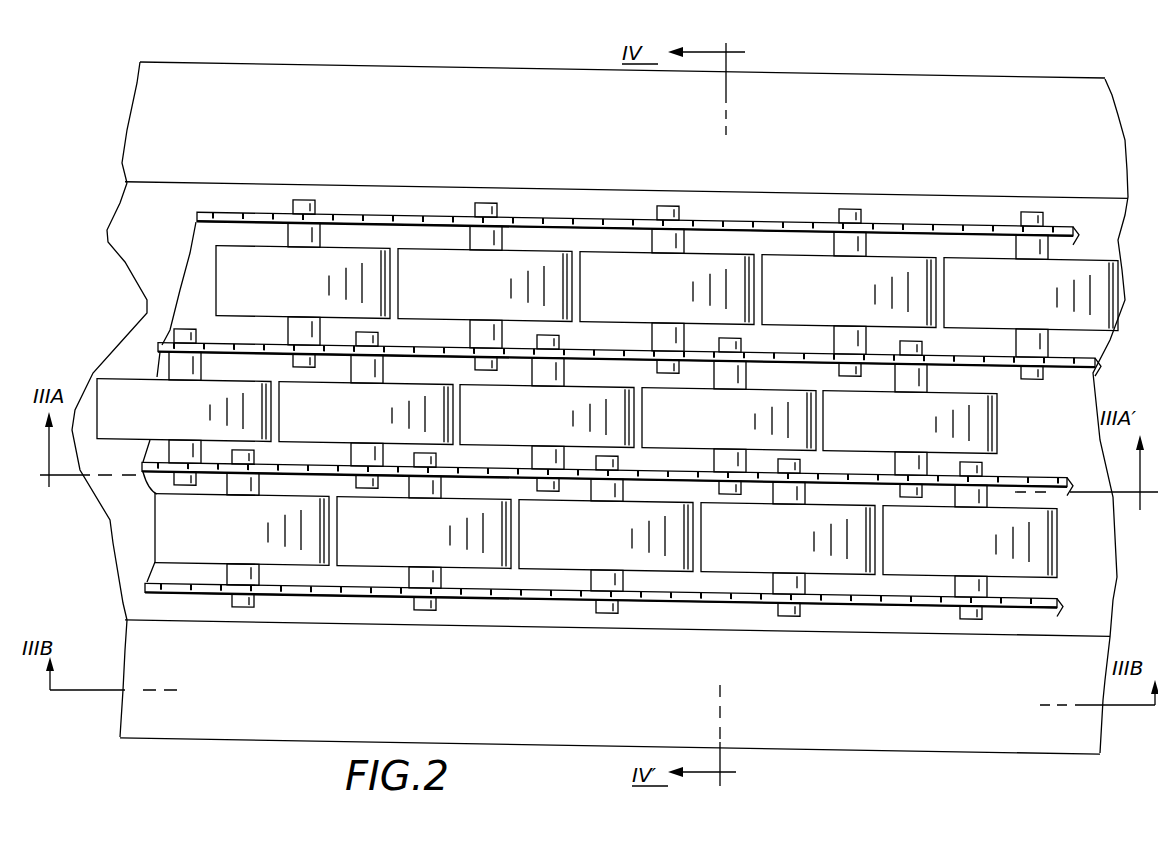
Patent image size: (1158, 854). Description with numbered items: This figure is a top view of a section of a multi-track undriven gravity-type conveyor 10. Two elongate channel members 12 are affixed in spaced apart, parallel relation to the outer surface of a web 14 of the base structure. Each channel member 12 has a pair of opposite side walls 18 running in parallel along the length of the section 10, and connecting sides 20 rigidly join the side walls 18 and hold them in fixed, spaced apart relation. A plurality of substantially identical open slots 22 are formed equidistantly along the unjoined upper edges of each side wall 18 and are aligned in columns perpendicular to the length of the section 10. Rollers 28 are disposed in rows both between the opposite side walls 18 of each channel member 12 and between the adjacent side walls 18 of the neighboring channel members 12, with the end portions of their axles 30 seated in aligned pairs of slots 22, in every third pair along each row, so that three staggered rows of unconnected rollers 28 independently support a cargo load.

The multi-track conveyor section 10 is at (386, 60).
The channel member 12 is at (217, 212).
The web 14 is at (1108, 614).
The side wall 18 is at (192, 231).
The connecting side 20 is at (195, 289).
The open slot 22 is at (430, 212).
The roller 28 is at (385, 260).
The axle 30 is at (308, 204).